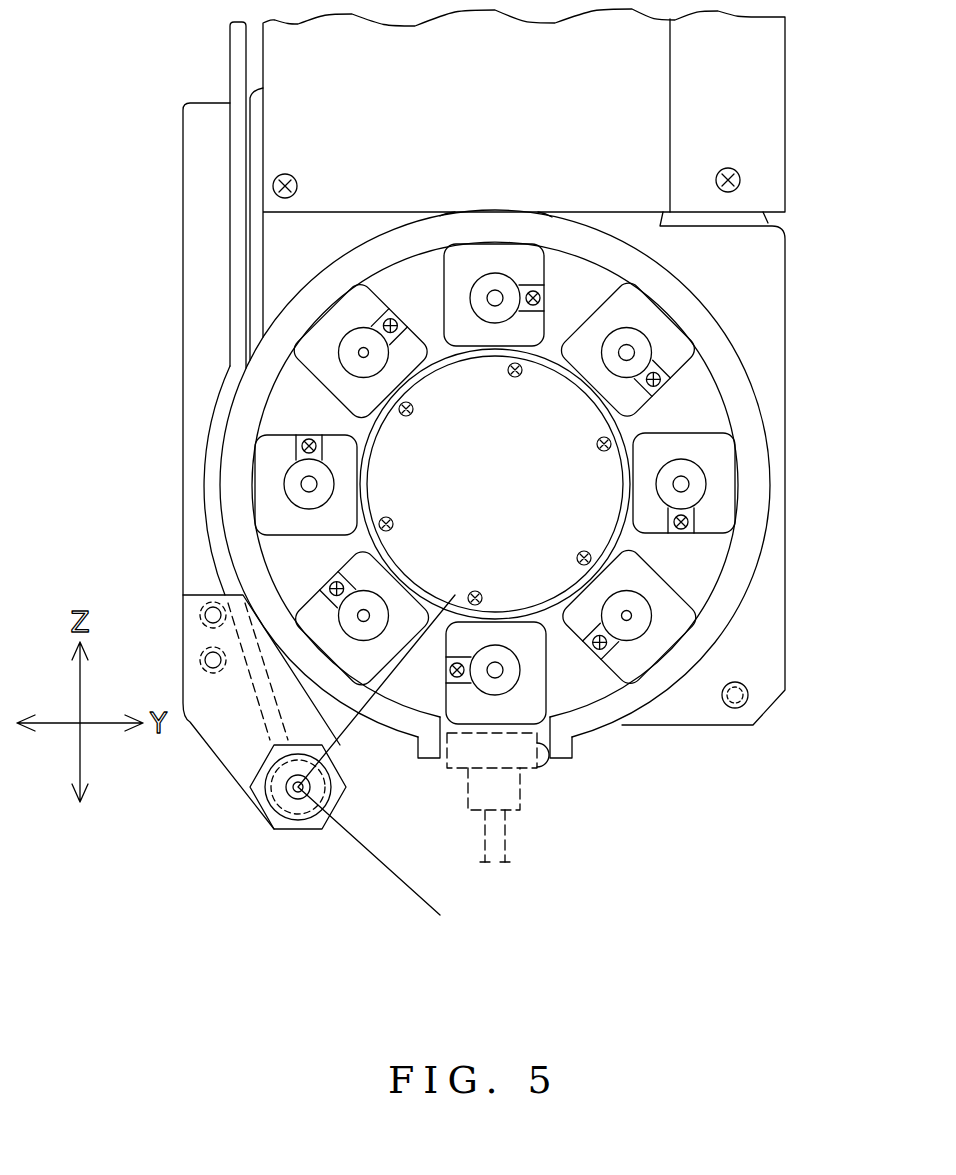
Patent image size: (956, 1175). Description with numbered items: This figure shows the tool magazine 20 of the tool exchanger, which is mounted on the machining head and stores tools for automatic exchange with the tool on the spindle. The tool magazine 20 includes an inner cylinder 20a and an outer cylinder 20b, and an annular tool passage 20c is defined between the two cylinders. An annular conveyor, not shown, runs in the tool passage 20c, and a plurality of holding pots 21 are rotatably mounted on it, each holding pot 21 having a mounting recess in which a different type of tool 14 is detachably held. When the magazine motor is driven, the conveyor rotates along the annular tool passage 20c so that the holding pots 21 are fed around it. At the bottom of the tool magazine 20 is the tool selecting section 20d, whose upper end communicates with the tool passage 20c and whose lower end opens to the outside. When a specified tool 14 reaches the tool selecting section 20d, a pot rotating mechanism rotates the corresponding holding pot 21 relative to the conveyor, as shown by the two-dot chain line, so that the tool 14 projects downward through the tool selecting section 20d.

The tool 14 is at (330, 620).
The tool magazine 20 is at (755, 487).
The inner cylinder 20a is at (612, 512).
The outer cylinder 20b is at (733, 375).
The annular tool passage 20c is at (705, 558).
The tool selecting section 20d is at (543, 770).
The holding pot 21 is at (392, 590).